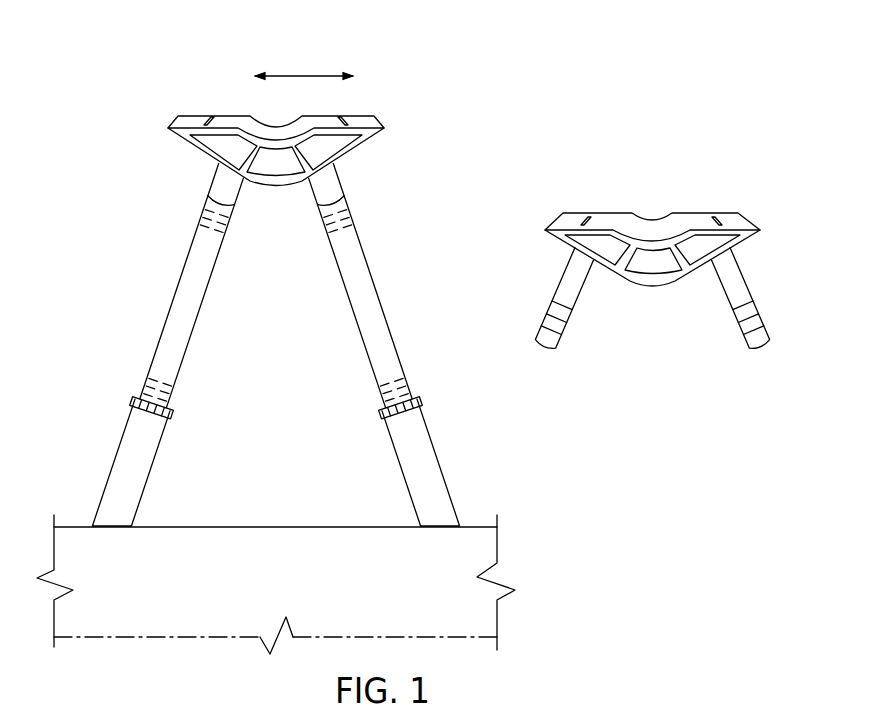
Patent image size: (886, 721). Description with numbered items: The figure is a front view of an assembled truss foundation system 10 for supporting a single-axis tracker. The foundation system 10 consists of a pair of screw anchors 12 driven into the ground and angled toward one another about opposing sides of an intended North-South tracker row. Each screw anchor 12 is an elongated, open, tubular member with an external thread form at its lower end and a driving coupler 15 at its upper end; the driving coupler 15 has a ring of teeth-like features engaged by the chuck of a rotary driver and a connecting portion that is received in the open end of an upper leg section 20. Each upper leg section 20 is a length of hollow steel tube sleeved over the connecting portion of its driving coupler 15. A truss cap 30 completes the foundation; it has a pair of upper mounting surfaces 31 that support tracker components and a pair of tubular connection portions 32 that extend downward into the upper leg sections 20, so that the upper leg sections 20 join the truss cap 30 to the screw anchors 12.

The truss foundation system 10 is at (118, 128).
The screw anchor 12 is at (110, 470).
The driving coupler 15 is at (172, 419).
The upper leg section 20 is at (171, 300).
The truss cap 30 is at (212, 103).
The upper mounting surface 31 is at (608, 216).
The tubular connection portion 32 is at (538, 268).